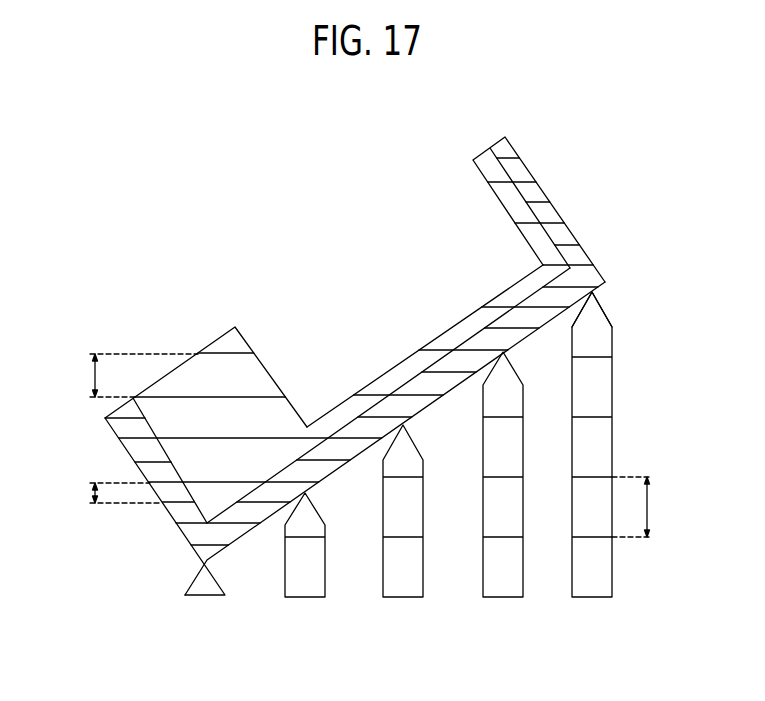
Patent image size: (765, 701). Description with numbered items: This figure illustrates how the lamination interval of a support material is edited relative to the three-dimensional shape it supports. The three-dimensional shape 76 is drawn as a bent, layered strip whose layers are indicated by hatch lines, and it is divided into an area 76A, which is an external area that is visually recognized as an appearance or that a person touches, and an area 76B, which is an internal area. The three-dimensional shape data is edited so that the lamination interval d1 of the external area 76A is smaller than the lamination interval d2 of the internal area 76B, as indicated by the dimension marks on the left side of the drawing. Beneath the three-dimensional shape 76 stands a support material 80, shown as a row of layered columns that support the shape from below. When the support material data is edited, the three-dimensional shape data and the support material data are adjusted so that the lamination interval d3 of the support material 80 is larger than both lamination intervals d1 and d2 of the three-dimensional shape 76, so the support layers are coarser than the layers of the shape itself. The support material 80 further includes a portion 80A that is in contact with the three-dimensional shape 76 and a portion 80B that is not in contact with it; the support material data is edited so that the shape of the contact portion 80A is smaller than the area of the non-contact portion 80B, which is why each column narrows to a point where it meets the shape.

The three-dimensional shape 76 is at (355, 361).
The area 76A is at (535, 195).
The area 76B is at (257, 378).
The support material 80 is at (449, 485).
The portion in contact with three-dimensional shape 80A is at (603, 292).
The portion not in contact with three-dimensional shape 80B is at (600, 443).
The lamination interval d1 is at (111, 493).
The lamination interval d2 is at (129, 375).
The lamination interval d3 is at (646, 507).